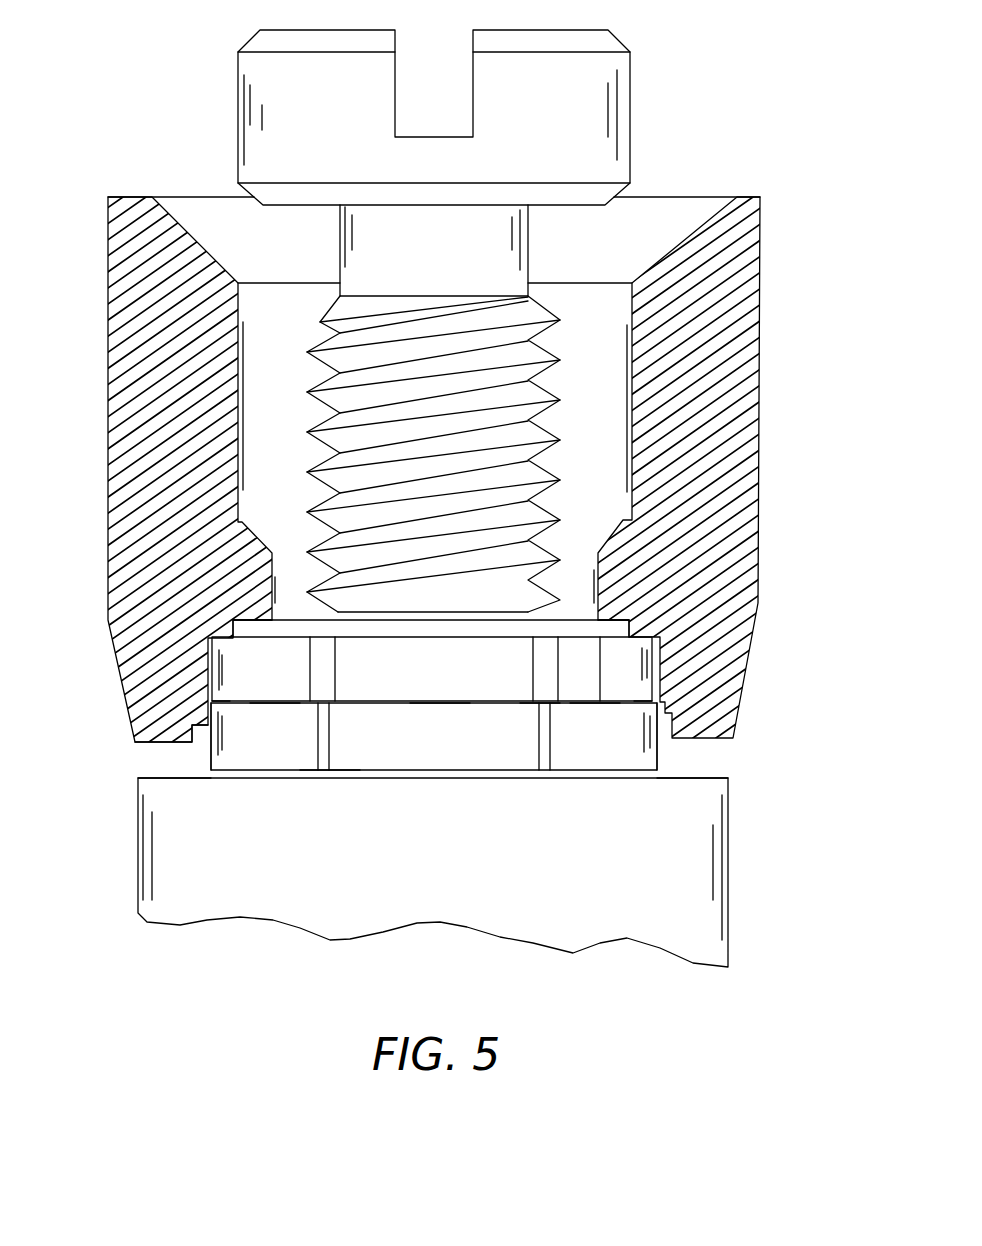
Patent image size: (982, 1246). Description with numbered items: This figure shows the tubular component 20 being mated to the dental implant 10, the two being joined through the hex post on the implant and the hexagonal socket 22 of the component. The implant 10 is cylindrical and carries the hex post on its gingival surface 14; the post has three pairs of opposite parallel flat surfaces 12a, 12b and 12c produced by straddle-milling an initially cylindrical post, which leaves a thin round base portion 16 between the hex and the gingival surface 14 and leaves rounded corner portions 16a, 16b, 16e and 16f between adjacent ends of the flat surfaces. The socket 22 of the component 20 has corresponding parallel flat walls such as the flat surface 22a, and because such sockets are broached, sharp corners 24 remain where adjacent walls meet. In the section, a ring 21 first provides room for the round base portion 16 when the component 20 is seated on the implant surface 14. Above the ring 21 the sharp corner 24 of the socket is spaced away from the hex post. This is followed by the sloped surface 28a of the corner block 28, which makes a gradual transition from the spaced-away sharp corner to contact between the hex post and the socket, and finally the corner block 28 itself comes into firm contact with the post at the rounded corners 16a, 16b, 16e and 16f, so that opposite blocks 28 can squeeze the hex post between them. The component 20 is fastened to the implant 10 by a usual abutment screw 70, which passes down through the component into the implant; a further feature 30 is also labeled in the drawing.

The dental implant 10 is at (448, 875).
The flat surface 12a is at (440, 735).
The flat surface 12b is at (597, 742).
The flat surface 12c is at (273, 743).
The gingival surface 14 is at (660, 770).
The round base portion 16 is at (210, 772).
The corner portion 16a is at (540, 742).
The corner portion 16b is at (660, 750).
The corner portion 16e is at (212, 752).
The corner portion 16f is at (318, 775).
The component 20 is at (700, 387).
The ring 21 is at (192, 742).
The hexagonal socket 22 is at (600, 637).
The flat surface 22a is at (420, 668).
The sharp corner 24 is at (660, 713).
The corner block 28 is at (542, 660).
The sloped surface 28a is at (650, 697).
The slot 30 is at (600, 673).
The abutment screw 70 is at (595, 134).